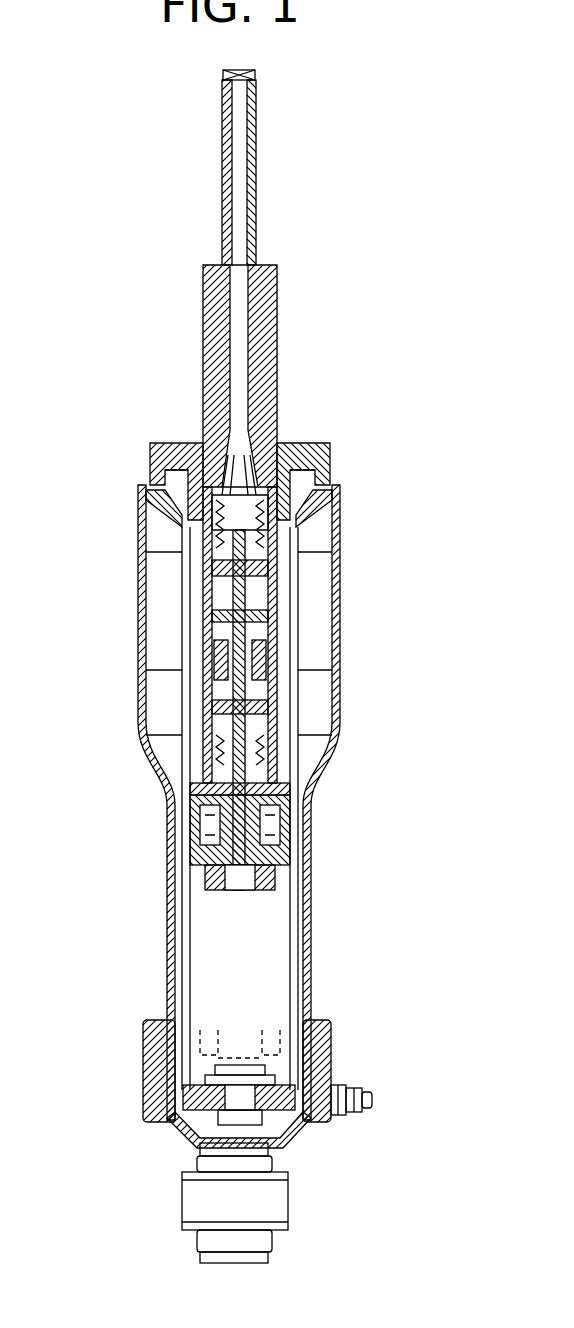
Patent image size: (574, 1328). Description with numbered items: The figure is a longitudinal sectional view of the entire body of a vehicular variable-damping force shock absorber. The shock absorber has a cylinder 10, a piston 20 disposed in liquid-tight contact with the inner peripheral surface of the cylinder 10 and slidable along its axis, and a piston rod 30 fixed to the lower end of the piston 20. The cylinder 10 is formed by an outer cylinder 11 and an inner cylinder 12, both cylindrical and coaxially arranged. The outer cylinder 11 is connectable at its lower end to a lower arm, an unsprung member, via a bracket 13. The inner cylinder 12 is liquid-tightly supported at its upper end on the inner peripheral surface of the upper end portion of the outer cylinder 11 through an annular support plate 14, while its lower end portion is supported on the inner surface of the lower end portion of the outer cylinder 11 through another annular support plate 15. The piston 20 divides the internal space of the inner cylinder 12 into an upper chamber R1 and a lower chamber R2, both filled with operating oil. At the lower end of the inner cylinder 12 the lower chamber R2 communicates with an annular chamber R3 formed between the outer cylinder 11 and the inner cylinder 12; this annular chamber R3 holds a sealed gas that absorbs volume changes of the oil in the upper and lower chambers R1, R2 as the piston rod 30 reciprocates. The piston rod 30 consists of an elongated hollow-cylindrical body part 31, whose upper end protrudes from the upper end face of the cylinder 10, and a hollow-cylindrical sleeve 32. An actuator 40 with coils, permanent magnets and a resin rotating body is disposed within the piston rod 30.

The cylinder 10 is at (289, 816).
The outer cylinder 11 is at (340, 637).
The inner cylinder 12 is at (338, 665).
The bracket 13 is at (288, 1207).
The annular support plate 14 is at (340, 532).
The annular support plate 15 is at (272, 1072).
The piston 20 is at (312, 903).
The piston rod 30 is at (199, 712).
The body part 31 is at (203, 660).
The sleeve 32 is at (222, 895).
The actuator 40 is at (340, 580).
The upper chamber R1 is at (280, 712).
The lower chamber R2 is at (265, 957).
The annular chamber R3 is at (165, 590).